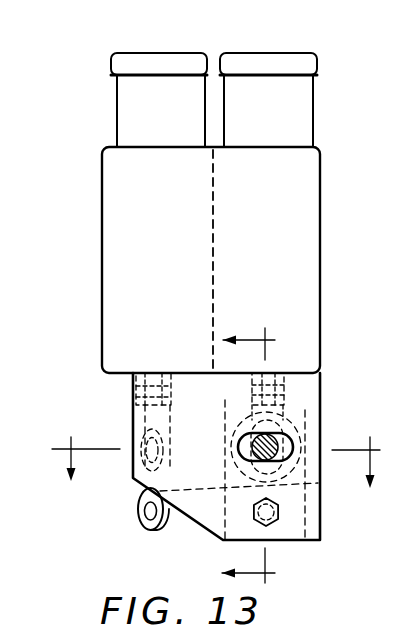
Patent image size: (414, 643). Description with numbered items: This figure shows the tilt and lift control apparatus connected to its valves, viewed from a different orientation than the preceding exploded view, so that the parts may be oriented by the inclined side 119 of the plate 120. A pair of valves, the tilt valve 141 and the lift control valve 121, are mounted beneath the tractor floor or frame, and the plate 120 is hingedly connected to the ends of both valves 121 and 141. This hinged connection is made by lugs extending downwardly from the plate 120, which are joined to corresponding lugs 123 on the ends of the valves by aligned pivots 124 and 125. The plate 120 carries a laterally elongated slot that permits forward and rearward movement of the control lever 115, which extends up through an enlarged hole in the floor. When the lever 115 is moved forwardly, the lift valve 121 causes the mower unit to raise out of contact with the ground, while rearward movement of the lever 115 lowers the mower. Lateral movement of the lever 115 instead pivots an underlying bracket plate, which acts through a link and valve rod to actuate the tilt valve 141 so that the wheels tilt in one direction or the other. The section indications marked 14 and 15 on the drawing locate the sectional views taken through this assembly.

The tilt valve 141 is at (122, 243).
The lift control valve 121 is at (297, 273).
The plate 120 is at (226, 444).
The pivot 124 is at (136, 397).
The pivot 125 is at (285, 393).
The lug 123 is at (252, 394).
The control lever 115 is at (277, 458).
The inclined side 119 is at (181, 518).
The section line 15- 15 is at (266, 461).
The section line 14- 14 is at (217, 462).